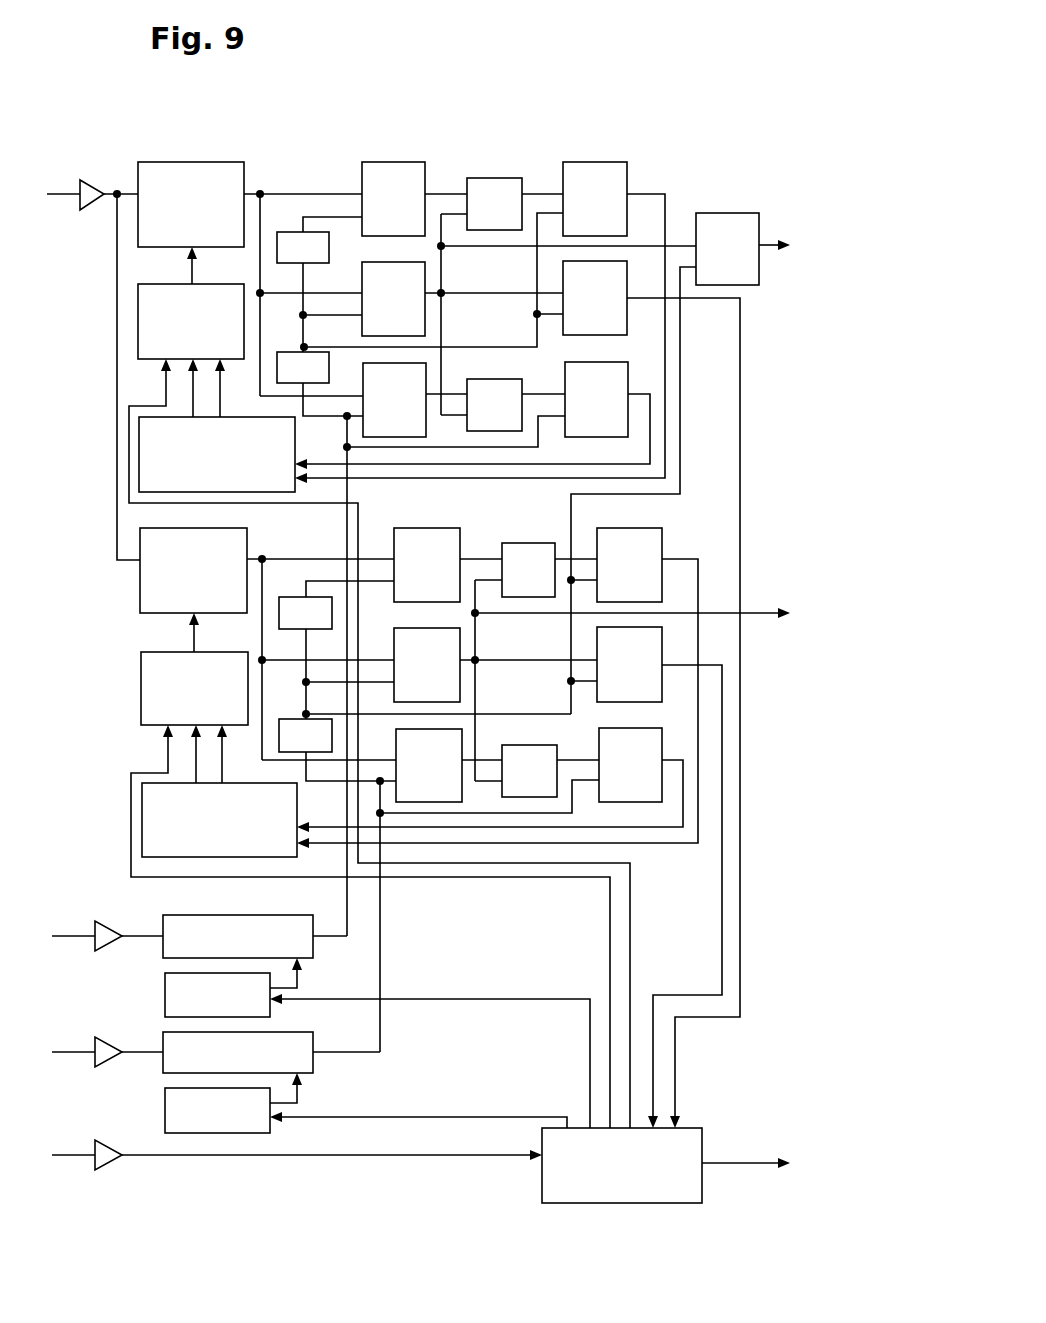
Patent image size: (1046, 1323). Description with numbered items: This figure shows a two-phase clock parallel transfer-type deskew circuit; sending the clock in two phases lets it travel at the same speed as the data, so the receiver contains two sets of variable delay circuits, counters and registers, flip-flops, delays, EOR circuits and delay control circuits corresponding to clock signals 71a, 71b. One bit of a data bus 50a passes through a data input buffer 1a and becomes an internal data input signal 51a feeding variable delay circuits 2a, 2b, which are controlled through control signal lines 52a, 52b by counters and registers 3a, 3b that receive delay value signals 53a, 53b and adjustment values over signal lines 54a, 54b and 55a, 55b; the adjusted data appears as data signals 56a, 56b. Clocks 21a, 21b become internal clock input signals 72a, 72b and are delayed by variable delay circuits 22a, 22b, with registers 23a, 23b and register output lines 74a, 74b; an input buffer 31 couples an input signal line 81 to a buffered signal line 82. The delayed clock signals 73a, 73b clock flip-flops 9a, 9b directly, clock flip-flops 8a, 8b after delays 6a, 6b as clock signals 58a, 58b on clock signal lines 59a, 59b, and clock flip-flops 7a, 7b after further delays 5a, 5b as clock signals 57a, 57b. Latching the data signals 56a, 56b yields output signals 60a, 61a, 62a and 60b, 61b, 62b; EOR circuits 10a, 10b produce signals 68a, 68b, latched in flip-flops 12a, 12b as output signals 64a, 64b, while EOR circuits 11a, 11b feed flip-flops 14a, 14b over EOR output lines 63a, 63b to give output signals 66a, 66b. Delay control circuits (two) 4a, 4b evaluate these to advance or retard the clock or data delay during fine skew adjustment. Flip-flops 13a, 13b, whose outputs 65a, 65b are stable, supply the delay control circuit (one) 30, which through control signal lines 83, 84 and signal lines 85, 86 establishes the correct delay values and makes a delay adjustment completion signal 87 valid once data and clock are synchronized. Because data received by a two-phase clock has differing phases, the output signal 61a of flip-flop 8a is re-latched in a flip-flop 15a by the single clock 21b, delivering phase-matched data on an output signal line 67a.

The data input buffer 1a is at (98, 190).
The variable delay circuit 2a is at (205, 162).
The variable delay circuit 2b is at (208, 528).
The counter and register 3a is at (205, 284).
The counter and register 3b is at (207, 652).
The delay control circuit (2) 4a is at (245, 417).
The delay control circuit (2) 4b is at (247, 783).
The delay 5a is at (297, 232).
The delay 5b is at (298, 597).
The delay 6a is at (298, 352).
The delay 6b is at (298, 719).
The flip-flop 7a is at (378, 162).
The flip-flop 7b is at (416, 528).
The flip-flop 8a is at (384, 262).
The flip-flop 8b is at (420, 628).
The flip-flop 9a is at (358, 363).
The flip-flop 9b is at (392, 729).
The EOR circuit 10a is at (478, 178).
The EOR circuit 10b is at (514, 543).
The EOR circuit 11a is at (482, 379).
The EOR circuit 11b is at (516, 745).
The flip-flop 12a is at (580, 162).
The flip-flop 12b is at (616, 528).
The flip-flop 13a is at (631, 280).
The flip-flop 13b is at (664, 645).
The flip-flop 14a is at (583, 362).
The flip-flop 14b is at (618, 728).
The flip-flop 15a is at (710, 213).
The clock 21a is at (100, 920).
The clock 21b is at (100, 1036).
The variable delay circuit 22a is at (272, 915).
The variable delay circuit 22b is at (272, 1032).
The register 23a is at (165, 990).
The register 23b is at (165, 1105).
The delay control circuit (1) 30 is at (690, 1128).
The input buffer 31 is at (110, 1172).
The data bus 50a is at (57, 192).
The internal data input signal 51a is at (117, 243).
The control signal line 52a is at (190, 266).
The control signal line 52b is at (192, 632).
The delay value signal 53a is at (166, 372).
The delay value signal 53b is at (168, 738).
The signal line 54a is at (220, 408).
The signal line 54b is at (222, 776).
The signal line 55a is at (193, 398).
The signal line 55b is at (196, 758).
The data signal 56a is at (280, 192).
The data signal 56b is at (280, 558).
The clock signal 57a is at (329, 216).
The clock signal 57b is at (322, 580).
The clock signal 58a is at (465, 348).
The clock signal 58b is at (500, 712).
The clock signal line 59a is at (347, 447).
The clock signal line 59b is at (380, 813).
The output signal 60a is at (450, 192).
The output signal 60b is at (484, 557).
The output signal 61a is at (462, 293).
The output signal 61b is at (497, 660).
The output signal 62a is at (452, 394).
The output signal 62b is at (488, 760).
The EOR output line 63a is at (540, 394).
The EOR output line 63b is at (573, 760).
The output signal 64a is at (653, 190).
The output signal 64b is at (690, 557).
The output 65a is at (740, 372).
The output 65b is at (722, 712).
The output signal 66a is at (650, 440).
The output signal 66b is at (663, 829).
The output signal line 67a is at (769, 250).
The signal 68a is at (540, 192).
The signal 68b is at (580, 557).
The clock signal 71a is at (68, 935).
The clock signal 71b is at (68, 1051).
The internal clock input signal 72a is at (138, 935).
The internal clock input signal 72b is at (138, 1051).
The clock signal 73a is at (352, 897).
The clock signal 73b is at (386, 1025).
The register output line 74a is at (300, 975).
The register output line 74b is at (300, 1090).
The input signal line 81 is at (68, 1160).
The buffered signal line 82 is at (428, 1156).
The control signal line 83 is at (435, 1116).
The control signal line 84 is at (435, 1000).
The signal line 85 is at (610, 928).
The signal line 86 is at (632, 928).
The delay adjustment completion signal 87 is at (733, 1163).